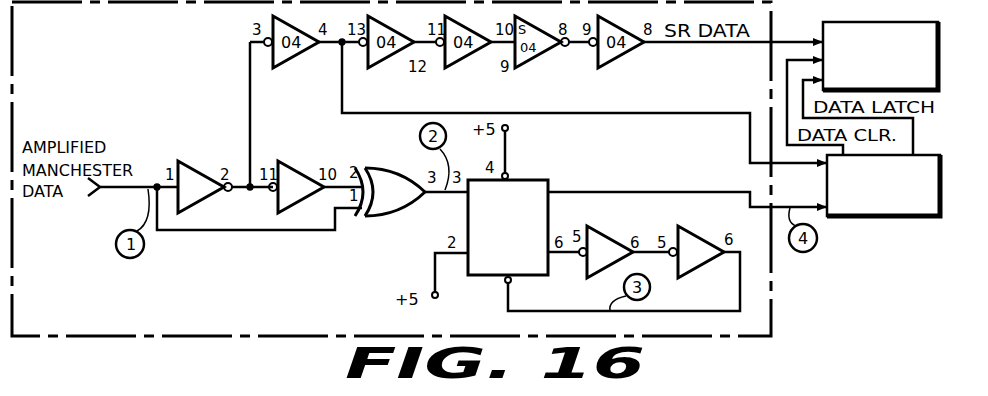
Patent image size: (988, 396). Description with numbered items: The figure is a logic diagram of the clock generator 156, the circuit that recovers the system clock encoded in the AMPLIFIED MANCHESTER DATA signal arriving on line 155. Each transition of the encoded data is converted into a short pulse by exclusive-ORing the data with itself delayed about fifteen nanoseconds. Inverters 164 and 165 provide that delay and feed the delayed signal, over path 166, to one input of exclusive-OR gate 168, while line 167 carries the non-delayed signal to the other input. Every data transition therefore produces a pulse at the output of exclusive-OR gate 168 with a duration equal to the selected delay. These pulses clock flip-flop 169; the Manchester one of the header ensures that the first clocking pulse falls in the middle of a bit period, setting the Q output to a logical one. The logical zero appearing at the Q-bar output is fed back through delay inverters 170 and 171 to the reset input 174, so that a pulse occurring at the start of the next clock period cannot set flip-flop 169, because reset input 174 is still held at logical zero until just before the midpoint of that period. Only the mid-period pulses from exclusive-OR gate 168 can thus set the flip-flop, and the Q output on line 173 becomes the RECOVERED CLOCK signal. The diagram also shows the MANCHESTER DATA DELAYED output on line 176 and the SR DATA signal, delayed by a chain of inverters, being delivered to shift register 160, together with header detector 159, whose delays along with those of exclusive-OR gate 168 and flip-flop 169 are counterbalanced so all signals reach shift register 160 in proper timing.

The line 155 is at (106, 198).
The clock generator 156 is at (262, 337).
The header detector 159 is at (910, 218).
The shift register 160 is at (880, 21).
The inverter 164 is at (198, 162).
The inverter 165 is at (292, 163).
The exclusive OR gate 166 is at (344, 184).
The line 167 is at (259, 232).
The exclusive-OR gate 168 is at (408, 215).
The flip-flop 169 is at (496, 278).
The delay inverter 170 is at (606, 239).
The delay inverter 171 is at (700, 240).
The line 173 is at (604, 193).
The reset input 174 is at (512, 284).
The Manchester data delayed line 176 is at (575, 116).